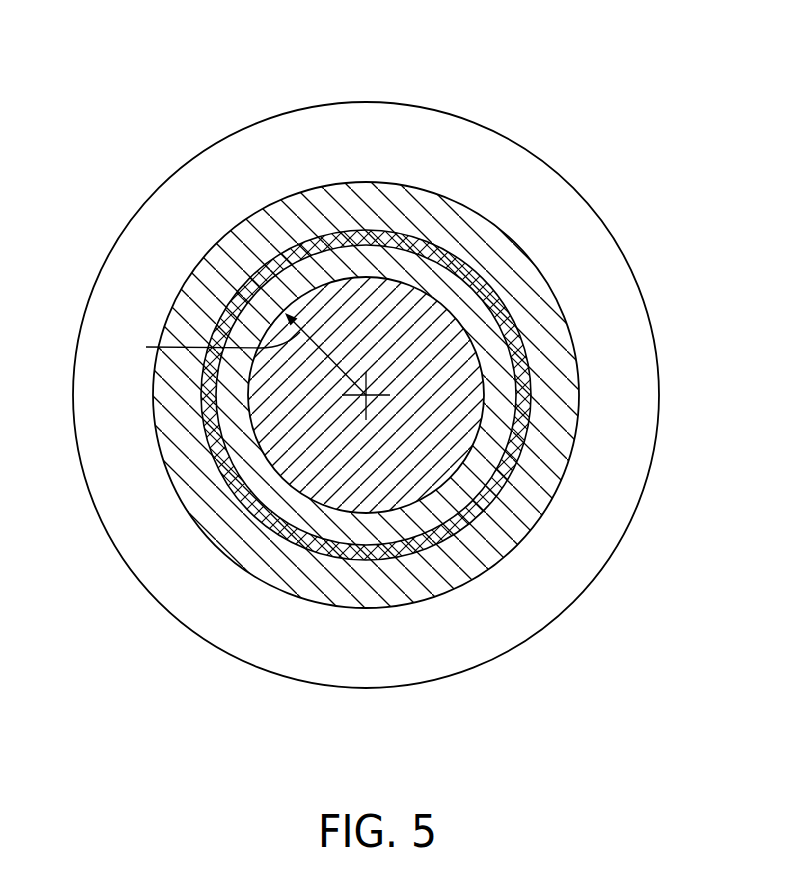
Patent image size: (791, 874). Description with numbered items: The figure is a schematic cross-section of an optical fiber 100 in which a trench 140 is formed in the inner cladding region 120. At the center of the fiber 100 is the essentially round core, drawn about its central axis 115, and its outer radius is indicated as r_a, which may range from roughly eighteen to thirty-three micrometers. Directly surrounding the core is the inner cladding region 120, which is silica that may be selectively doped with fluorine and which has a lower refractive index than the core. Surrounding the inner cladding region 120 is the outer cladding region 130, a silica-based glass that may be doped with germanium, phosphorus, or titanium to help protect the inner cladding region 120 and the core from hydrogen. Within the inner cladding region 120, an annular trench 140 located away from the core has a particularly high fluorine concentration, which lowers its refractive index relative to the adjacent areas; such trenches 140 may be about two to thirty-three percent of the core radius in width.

The optical fiber 100 is at (162, 106).
The central axis 115 is at (360, 398).
The inner cladding region 120 is at (493, 345).
The outer cladding region 130 is at (442, 137).
The trench 140 is at (500, 485).